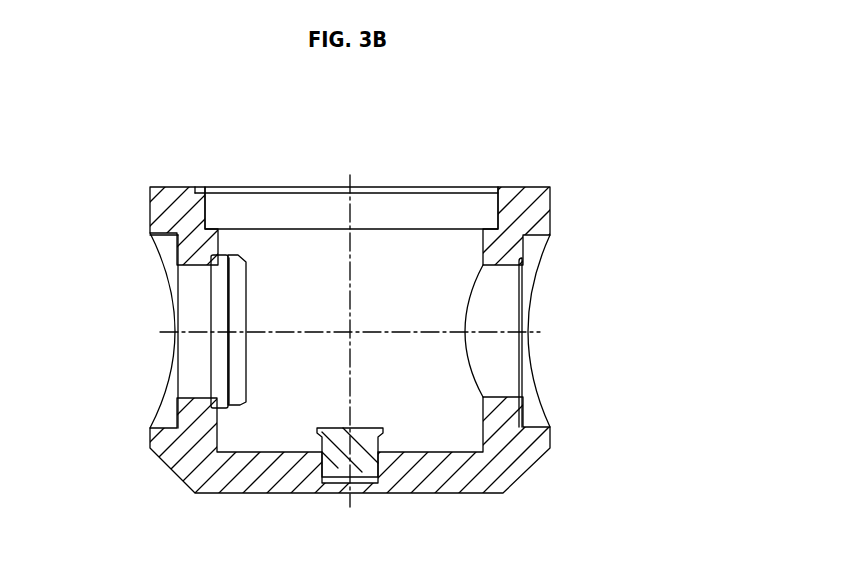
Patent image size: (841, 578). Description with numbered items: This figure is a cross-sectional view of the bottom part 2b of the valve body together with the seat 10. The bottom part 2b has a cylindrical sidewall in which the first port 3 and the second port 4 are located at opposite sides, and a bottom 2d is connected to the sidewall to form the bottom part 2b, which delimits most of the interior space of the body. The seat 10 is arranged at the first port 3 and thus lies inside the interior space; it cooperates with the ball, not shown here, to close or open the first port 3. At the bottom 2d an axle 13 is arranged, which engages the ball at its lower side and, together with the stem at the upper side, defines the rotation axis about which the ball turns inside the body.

The bottom part 2b is at (540, 205).
The bottom 2d is at (428, 487).
The first port 3 is at (199, 365).
The second port 4 is at (505, 366).
The seat 10 is at (233, 293).
The axle 13 is at (337, 457).